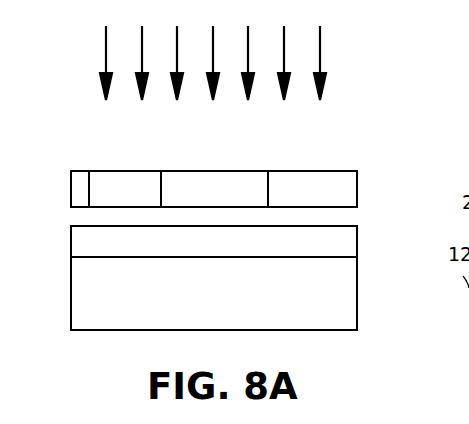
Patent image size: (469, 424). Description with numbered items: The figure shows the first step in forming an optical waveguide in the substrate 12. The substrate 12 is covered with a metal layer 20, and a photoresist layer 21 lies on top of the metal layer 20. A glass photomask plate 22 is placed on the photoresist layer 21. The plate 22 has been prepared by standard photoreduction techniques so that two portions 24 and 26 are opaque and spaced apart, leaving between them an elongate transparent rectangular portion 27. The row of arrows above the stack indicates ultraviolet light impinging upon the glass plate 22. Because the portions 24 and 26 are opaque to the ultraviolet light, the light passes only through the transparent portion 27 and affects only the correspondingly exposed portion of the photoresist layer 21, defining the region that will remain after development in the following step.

The substrate 12 is at (357, 292).
The metal layer 20 is at (357, 240).
The photoresist layer 21 is at (89, 207).
The glass photomask plate 22 is at (378, 168).
The opaque portion 24 is at (143, 170).
The opaque portion 26 is at (322, 170).
The transparent rectangular portion 27 is at (232, 170).